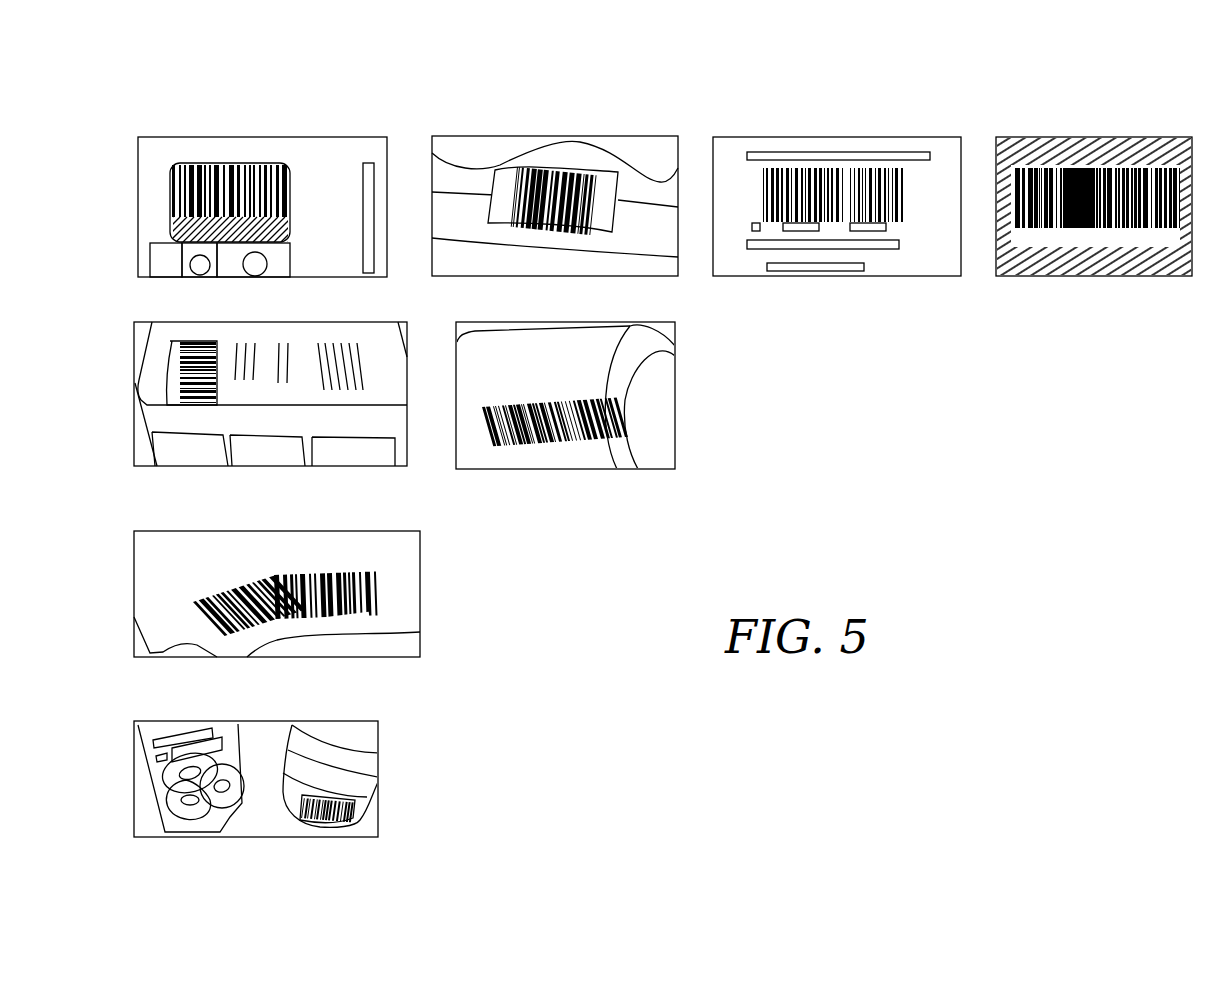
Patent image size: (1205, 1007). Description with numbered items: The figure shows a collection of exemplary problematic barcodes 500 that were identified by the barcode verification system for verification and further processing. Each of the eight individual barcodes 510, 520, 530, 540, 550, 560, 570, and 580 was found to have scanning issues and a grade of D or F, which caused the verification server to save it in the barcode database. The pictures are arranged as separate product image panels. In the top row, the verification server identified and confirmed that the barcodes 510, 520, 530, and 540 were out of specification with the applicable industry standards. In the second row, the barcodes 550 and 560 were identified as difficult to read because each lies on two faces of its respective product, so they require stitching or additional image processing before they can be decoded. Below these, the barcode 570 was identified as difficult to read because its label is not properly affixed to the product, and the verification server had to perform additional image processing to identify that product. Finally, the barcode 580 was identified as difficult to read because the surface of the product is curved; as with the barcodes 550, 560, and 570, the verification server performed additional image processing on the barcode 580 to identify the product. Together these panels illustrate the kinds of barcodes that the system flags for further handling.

The problematic barcodes 500 is at (160, 89).
The barcode 510 is at (272, 137).
The barcode 520 is at (517, 142).
The barcode 530 is at (780, 138).
The barcode 540 is at (1060, 138).
The barcode 550 is at (315, 323).
The barcode 560 is at (612, 325).
The barcode 570 is at (293, 537).
The barcode 580 is at (256, 724).